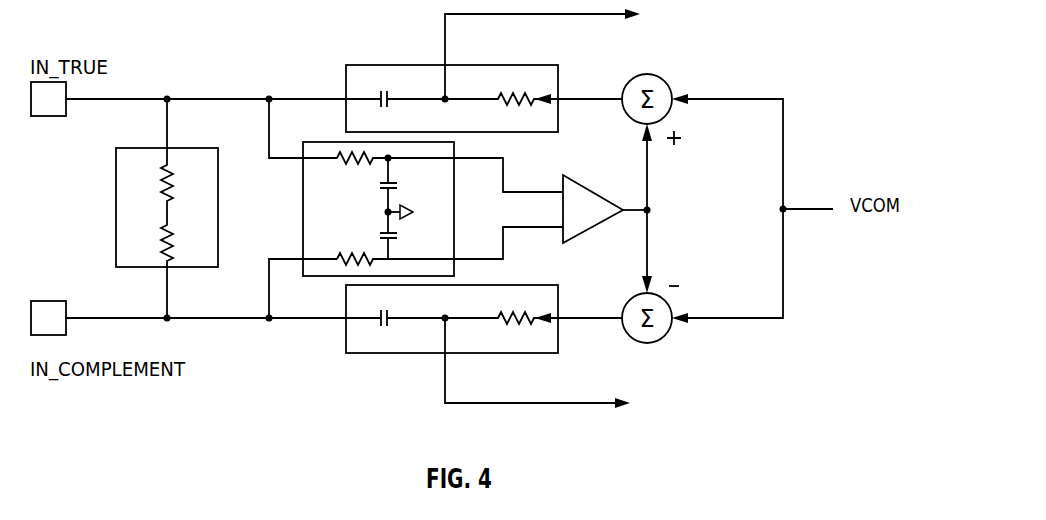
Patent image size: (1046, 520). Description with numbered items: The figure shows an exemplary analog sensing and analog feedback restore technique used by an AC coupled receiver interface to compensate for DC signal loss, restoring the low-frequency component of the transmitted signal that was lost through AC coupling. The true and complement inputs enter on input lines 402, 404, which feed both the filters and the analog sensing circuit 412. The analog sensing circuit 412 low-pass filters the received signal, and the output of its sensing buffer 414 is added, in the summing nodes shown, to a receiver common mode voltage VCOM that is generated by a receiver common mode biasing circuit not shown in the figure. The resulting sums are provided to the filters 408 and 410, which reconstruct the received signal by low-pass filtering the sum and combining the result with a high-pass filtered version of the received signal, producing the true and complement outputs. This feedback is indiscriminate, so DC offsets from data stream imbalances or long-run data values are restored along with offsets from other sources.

The true input signal line 402 is at (208, 99).
The complement input signal line 404 is at (218, 318).
The filter 408 is at (470, 128).
The filter 410 is at (470, 311).
The analog sensing circuit 412 is at (452, 196).
The sensing buffer 414 is at (600, 221).